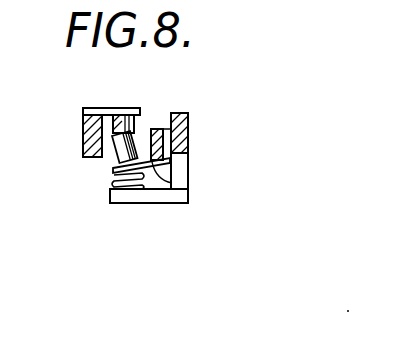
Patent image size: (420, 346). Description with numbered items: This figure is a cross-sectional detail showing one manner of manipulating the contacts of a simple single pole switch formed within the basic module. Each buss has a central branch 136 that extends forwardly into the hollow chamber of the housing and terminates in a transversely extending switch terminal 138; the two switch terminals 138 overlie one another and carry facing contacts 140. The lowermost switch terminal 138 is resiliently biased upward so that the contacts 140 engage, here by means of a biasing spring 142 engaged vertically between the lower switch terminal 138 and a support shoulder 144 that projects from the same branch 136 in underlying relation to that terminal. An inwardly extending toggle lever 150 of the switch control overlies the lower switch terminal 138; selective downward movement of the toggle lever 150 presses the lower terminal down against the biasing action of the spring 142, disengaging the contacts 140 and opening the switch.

The central branch 136 is at (84, 138).
The switch terminal 138 is at (110, 107).
The contact 140 is at (143, 138).
The biasing spring 142 is at (120, 179).
The support shoulder 144 is at (137, 205).
The toggle lever 150 is at (164, 139).